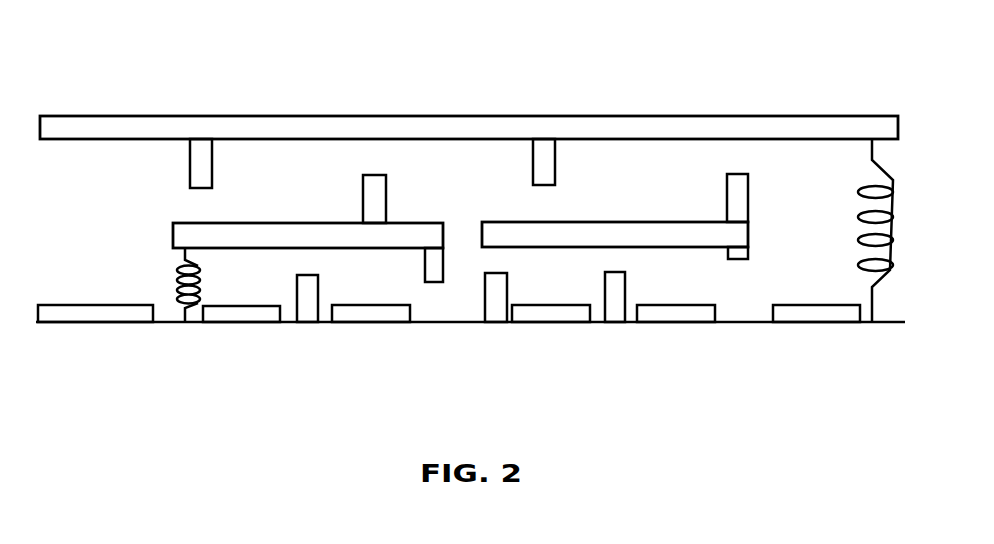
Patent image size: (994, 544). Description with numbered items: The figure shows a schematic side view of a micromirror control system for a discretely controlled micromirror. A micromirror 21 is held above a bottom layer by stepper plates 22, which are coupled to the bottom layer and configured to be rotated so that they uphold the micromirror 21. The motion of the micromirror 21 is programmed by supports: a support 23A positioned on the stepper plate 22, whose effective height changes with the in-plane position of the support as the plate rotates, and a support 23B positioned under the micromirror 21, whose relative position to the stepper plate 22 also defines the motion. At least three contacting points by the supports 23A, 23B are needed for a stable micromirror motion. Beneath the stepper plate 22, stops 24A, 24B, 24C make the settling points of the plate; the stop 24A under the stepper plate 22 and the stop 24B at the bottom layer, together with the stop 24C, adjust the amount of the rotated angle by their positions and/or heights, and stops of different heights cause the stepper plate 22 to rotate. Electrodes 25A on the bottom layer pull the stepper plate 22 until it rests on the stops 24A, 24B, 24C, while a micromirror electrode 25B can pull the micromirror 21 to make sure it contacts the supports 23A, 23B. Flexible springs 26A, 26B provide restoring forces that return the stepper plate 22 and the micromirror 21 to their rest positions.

The micromirror 21 is at (118, 113).
The stepper plate 22 is at (650, 215).
The support on the stepper plate 23A is at (386, 200).
The support under the micromirror 23B is at (186, 170).
The stop 24A is at (431, 290).
The stop 24B is at (491, 322).
The stop 24C is at (318, 297).
The electrode 25A is at (693, 313).
The micromirror electrode 25B is at (820, 313).
The flexible spring 26A is at (165, 282).
The flexible spring 26B is at (863, 182).